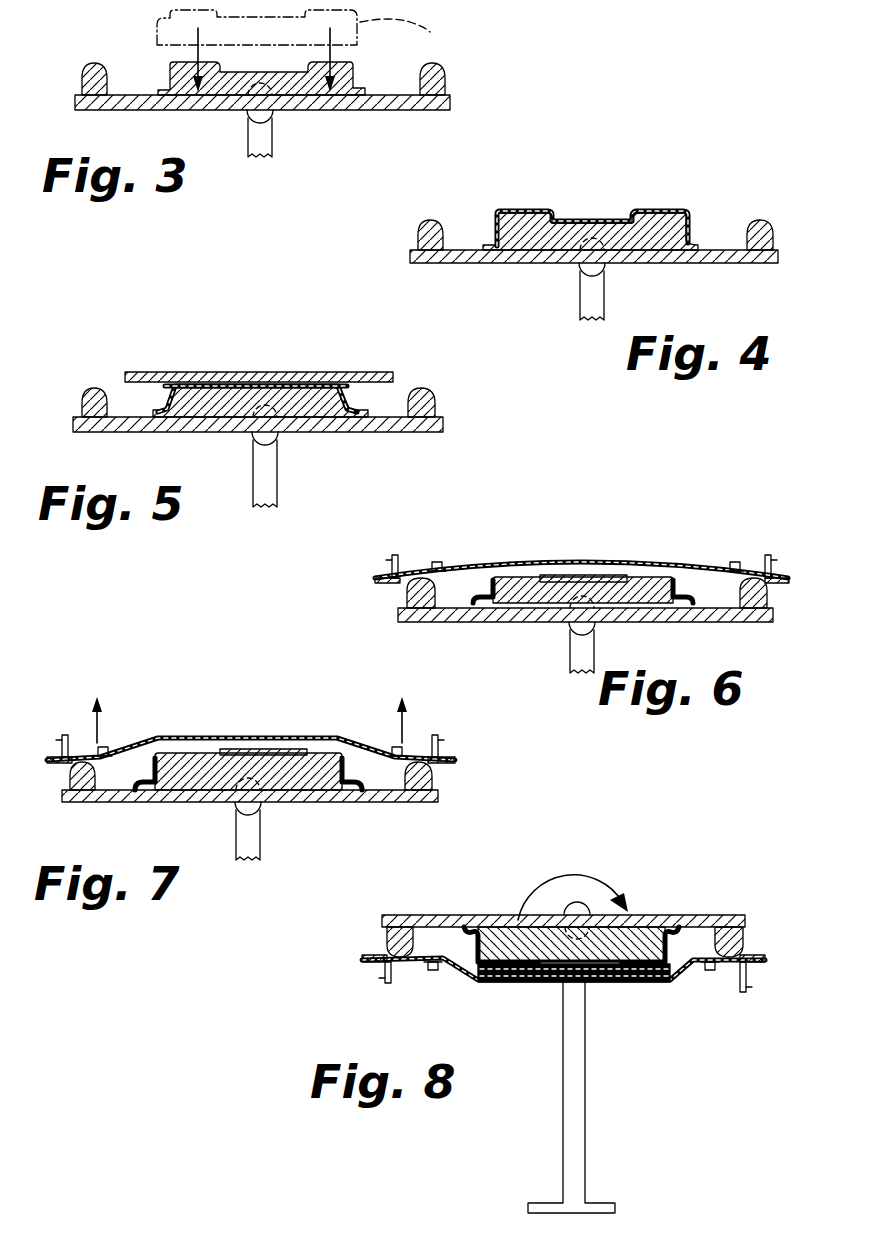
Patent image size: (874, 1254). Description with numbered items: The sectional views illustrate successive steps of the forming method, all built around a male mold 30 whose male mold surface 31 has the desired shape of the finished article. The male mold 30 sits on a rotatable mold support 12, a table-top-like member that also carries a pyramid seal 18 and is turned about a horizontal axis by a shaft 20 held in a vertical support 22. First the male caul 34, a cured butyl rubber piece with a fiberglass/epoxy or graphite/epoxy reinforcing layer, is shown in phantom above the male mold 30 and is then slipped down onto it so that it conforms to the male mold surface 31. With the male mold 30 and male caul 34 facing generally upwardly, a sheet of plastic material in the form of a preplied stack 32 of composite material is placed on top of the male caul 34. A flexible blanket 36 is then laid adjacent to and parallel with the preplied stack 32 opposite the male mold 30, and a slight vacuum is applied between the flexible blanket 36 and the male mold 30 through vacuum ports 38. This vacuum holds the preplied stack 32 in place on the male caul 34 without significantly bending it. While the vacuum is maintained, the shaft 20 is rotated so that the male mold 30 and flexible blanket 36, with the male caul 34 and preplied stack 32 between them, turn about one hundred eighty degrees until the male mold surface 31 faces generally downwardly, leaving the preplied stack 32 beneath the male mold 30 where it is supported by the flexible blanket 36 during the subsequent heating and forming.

In FIG. 3, the mold support 12 is at (400, 110).
In FIG. 4, the mold support 12 is at (472, 263).
In FIG. 5, the mold support 12 is at (143, 433).
In FIG. 6, the mold support 12 is at (428, 622).
In FIG. 7, the mold support 12 is at (377, 802).
In FIG. 8, the mold support 12 is at (433, 915).
In FIG. 3, the pyramid seal 18 is at (445, 85).
In FIG. 4, the pyramid seal 18 is at (422, 231).
In FIG. 5, the pyramid seal 18 is at (83, 400).
In FIG. 6, the pyramid seal 18 is at (407, 597).
In FIG. 7, the pyramid seal 18 is at (432, 777).
In FIG. 8, the pyramid seal 18 is at (388, 940).
In FIG. 3, the shaft 20 is at (270, 95).
In FIG. 4, the shaft 20 is at (607, 263).
In FIG. 5, the shaft 20 is at (277, 437).
In FIG. 6, the shaft 20 is at (570, 631).
In FIG. 7, the shaft 20 is at (263, 795).
In FIG. 8, the shaft 20 is at (585, 903).
In FIG. 3, the vertical support 22 is at (248, 142).
In FIG. 4, the vertical support 22 is at (578, 302).
In FIG. 5, the vertical support 22 is at (280, 492).
In FIG. 6, the vertical support 22 is at (568, 663).
In FIG. 7, the vertical support 22 is at (263, 850).
In FIG. 8, the vertical support 22 is at (585, 1087).
In FIG. 3, the male mold 30 is at (185, 87).
In FIG. 4, the male mold 30 is at (672, 240).
In FIG. 5, the male mold 30 is at (320, 403).
In FIG. 6, the male mold 30 is at (657, 600).
In FIG. 7, the male mold 30 is at (182, 788).
In FIG. 8, the male mold 30 is at (640, 938).
In FIG. 3, the male mold surface 31 is at (303, 62).
In FIG. 4, the male mold surface 31 is at (528, 213).
In FIG. 5, the preplied stack 32 is at (162, 371).
In FIG. 6, the preplied stack 32 is at (578, 567).
In FIG. 7, the preplied stack 32 is at (130, 768).
In FIG. 8, the preplied stack 32 is at (693, 960).
In FIG. 3, the male caul 34 is at (406, 32).
In FIG. 4, the male caul 34 is at (653, 212).
In FIG. 5, the male caul 34 is at (347, 397).
In FIG. 6, the male caul 34 is at (490, 593).
In FIG. 7, the male caul 34 is at (355, 760).
In FIG. 8, the male caul 34 is at (665, 950).
In FIG. 6, the flexible blanket 36 is at (460, 572).
In FIG. 7, the flexible blanket 36 is at (132, 743).
In FIG. 8, the flexible blanket 36 is at (487, 982).
In FIG. 6, the vacuum ports 38 is at (437, 562).
In FIG. 7, the vacuum ports 38 is at (392, 748).
In FIG. 8, the vacuum ports 38 is at (432, 969).